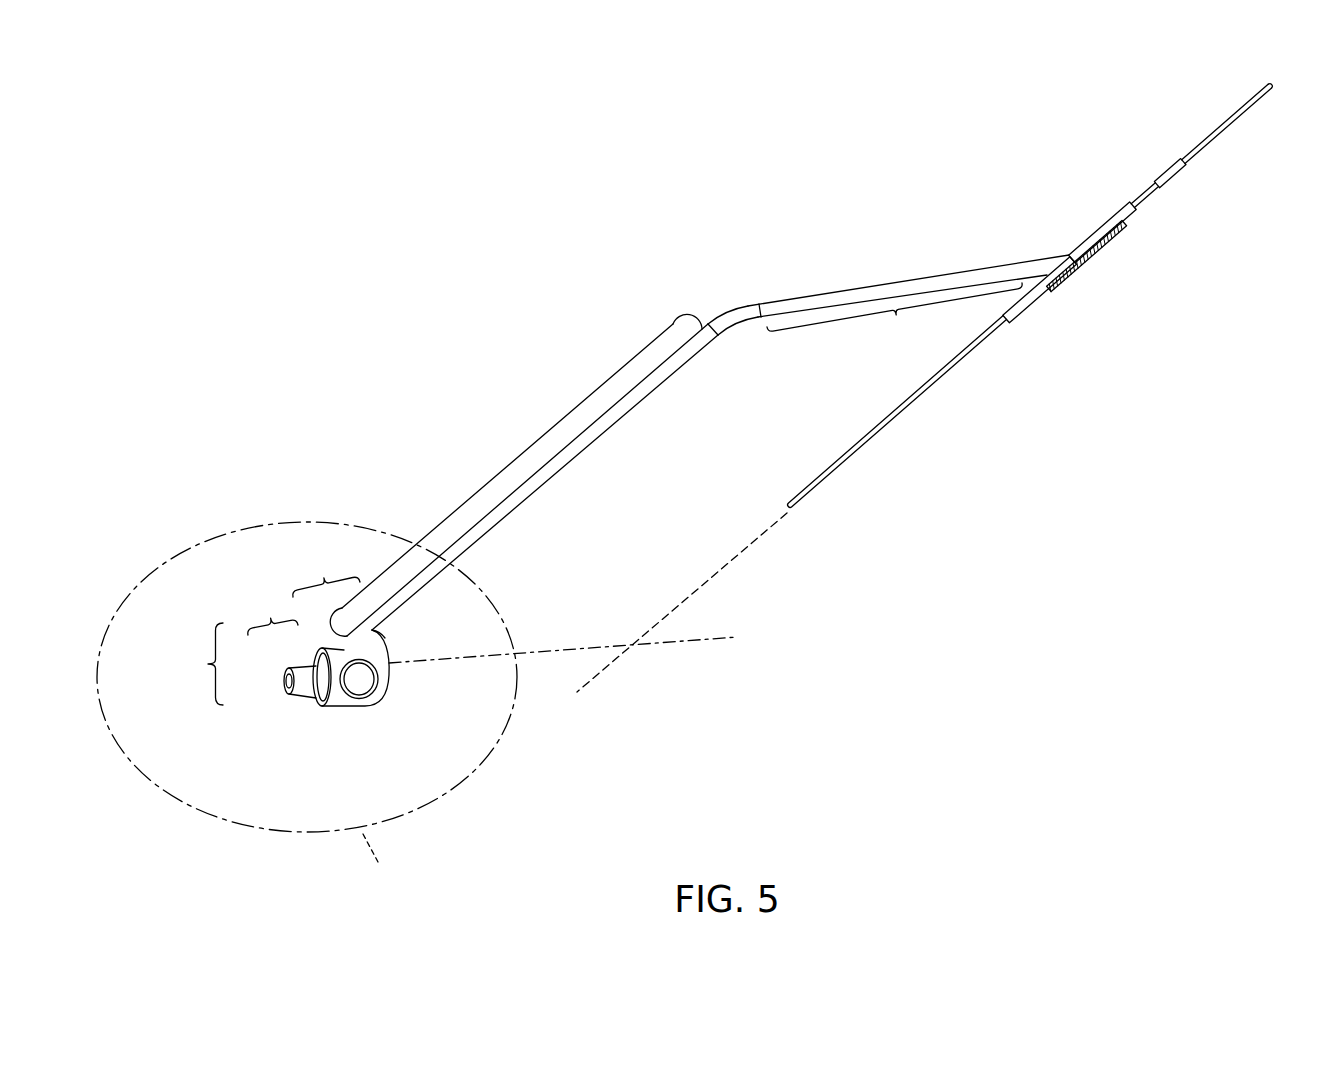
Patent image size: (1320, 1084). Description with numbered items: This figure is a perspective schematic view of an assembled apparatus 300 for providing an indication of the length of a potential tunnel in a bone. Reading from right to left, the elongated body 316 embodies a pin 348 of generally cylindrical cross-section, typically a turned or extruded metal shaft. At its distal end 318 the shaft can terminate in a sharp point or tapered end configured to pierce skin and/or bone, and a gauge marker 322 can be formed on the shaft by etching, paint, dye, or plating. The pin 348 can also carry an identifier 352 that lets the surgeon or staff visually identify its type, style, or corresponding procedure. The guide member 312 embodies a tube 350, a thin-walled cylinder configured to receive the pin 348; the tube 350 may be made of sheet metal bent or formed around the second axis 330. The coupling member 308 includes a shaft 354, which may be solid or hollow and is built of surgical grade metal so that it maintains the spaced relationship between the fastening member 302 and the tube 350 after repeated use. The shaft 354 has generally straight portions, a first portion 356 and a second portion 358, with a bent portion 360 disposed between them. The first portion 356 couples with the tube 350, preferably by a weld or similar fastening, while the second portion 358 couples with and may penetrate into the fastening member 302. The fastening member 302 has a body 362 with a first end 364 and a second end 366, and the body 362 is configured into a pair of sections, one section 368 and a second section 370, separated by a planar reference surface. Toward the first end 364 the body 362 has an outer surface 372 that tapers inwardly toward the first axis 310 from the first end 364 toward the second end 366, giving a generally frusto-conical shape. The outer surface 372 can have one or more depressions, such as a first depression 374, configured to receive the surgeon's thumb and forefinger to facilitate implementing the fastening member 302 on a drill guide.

The apparatus 300 is at (336, 208).
The fastening member 302 is at (348, 746).
The coupling member 308 is at (746, 226).
The first axis 310 is at (697, 641).
The guide member 312 is at (1069, 311).
The elongated body 316 is at (1236, 143).
The distal end 318 is at (822, 518).
The gauge marker 322 is at (986, 339).
The second axis 330 is at (738, 557).
The pin 348 is at (1244, 115).
The tube 350 is at (1131, 220).
The identifier 352 is at (1147, 151).
The shaft 354 is at (893, 283).
The first portion 356 is at (894, 318).
The second portion 358 is at (488, 483).
The bent portion 360 is at (730, 308).
The body 362 is at (197, 664).
The first end 364 is at (410, 682).
The second end 366 is at (262, 697).
The section 368 is at (326, 572).
The second section 370 is at (273, 612).
The outer surface 372 is at (383, 638).
The first depression 374 is at (373, 697).